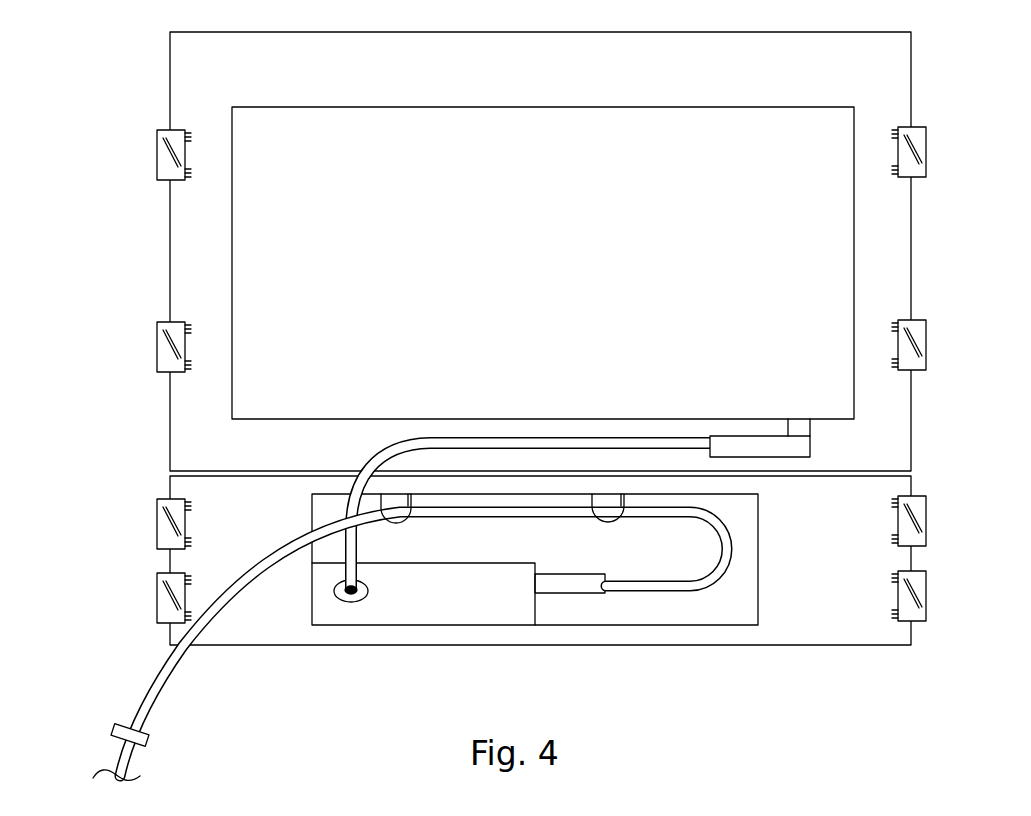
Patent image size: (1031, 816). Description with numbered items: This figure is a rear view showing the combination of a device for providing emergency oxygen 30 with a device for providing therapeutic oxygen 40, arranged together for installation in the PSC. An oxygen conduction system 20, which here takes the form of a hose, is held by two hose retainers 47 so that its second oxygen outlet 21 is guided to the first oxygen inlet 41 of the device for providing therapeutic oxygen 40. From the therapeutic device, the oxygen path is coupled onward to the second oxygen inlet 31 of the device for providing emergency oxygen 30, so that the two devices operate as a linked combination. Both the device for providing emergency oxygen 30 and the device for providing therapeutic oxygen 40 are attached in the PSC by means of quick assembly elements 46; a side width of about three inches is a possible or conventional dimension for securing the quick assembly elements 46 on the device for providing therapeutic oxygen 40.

The oxygen conduction system 20 is at (119, 757).
The second oxygen outlet 21 is at (136, 716).
The device for providing emergency oxygen 30 is at (912, 246).
The second oxygen inlet 31 is at (800, 446).
The device for providing therapeutic oxygen 40 is at (912, 632).
The first oxygen inlet 41 is at (567, 587).
The quick assembly elements 46 is at (157, 156).
The hose retainers 47 is at (397, 522).